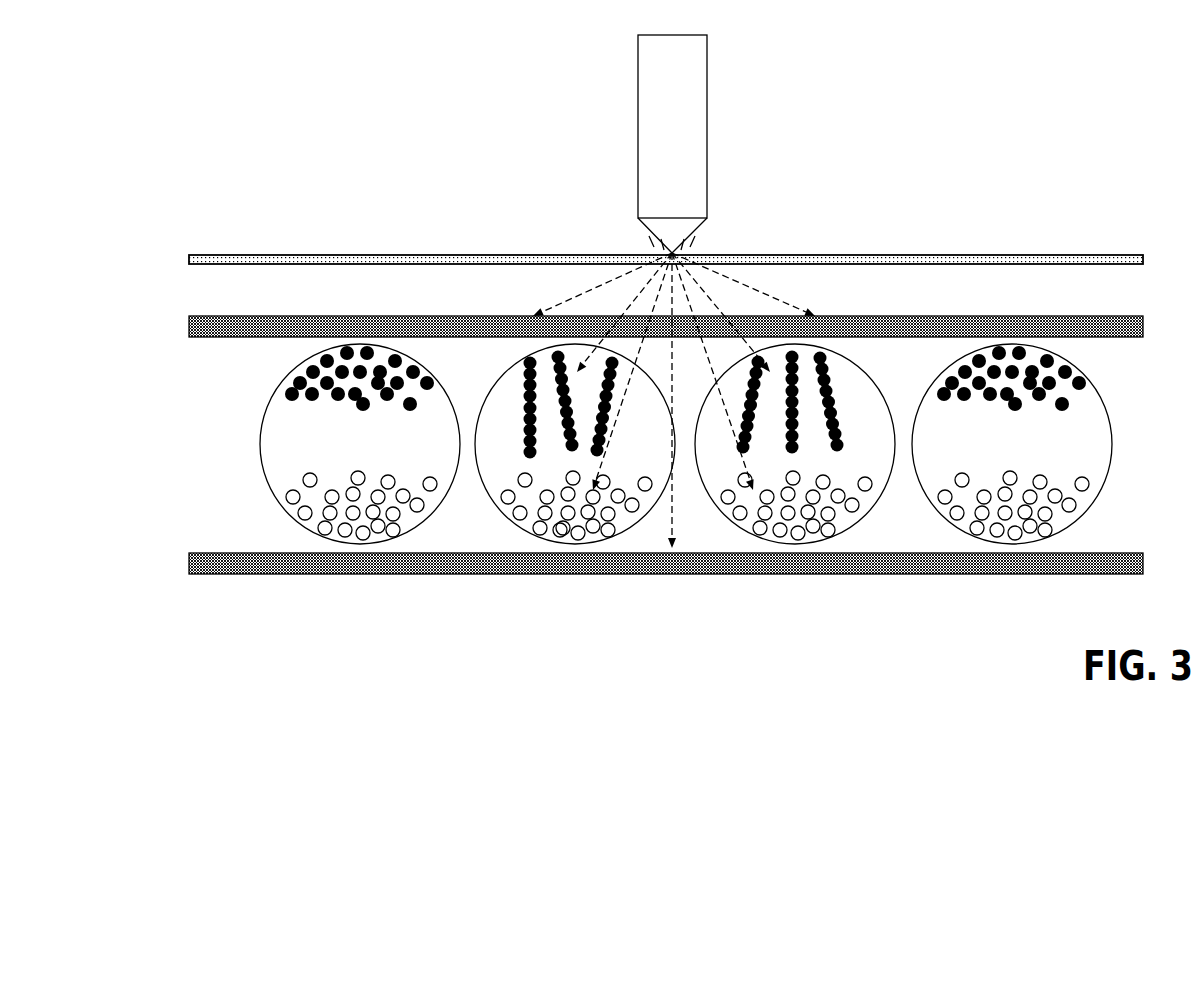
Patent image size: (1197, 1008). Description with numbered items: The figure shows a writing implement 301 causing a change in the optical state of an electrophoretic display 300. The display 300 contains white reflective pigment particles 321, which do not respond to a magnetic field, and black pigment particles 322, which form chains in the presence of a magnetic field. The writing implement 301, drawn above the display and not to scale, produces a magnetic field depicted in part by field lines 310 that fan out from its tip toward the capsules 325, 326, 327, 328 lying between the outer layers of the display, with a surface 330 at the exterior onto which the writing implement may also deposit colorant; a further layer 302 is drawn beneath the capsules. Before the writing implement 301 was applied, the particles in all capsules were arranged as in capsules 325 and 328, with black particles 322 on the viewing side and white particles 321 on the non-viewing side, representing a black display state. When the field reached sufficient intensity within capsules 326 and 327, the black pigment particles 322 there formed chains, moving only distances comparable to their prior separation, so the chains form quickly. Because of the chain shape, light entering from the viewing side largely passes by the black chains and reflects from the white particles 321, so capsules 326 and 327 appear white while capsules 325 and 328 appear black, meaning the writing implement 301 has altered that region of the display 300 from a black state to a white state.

The display 300 is at (168, 185).
The writing implement 301 is at (652, 120).
The bottom substrate 302 is at (215, 563).
The field lines 310 is at (590, 287).
The white reflective pigment particles 321 is at (563, 522).
The black pigment particles 322 is at (518, 367).
The capsule 325 is at (305, 453).
The capsule 326 is at (532, 466).
The capsule 327 is at (882, 453).
The capsule 328 is at (1088, 453).
The surface 330 is at (215, 258).